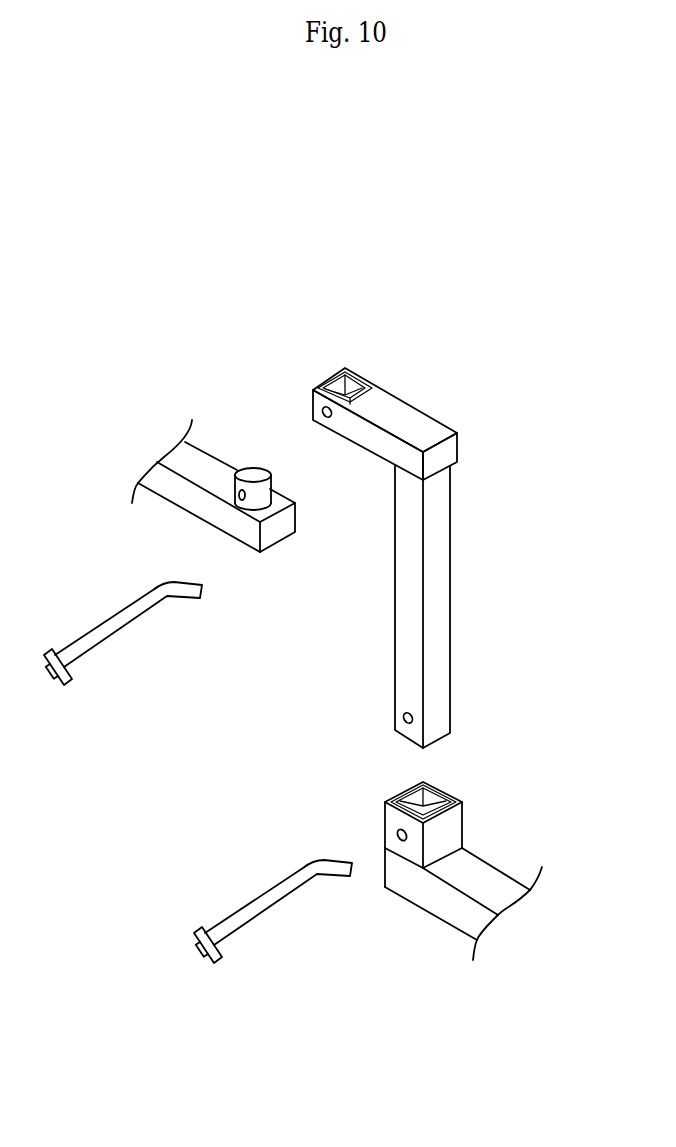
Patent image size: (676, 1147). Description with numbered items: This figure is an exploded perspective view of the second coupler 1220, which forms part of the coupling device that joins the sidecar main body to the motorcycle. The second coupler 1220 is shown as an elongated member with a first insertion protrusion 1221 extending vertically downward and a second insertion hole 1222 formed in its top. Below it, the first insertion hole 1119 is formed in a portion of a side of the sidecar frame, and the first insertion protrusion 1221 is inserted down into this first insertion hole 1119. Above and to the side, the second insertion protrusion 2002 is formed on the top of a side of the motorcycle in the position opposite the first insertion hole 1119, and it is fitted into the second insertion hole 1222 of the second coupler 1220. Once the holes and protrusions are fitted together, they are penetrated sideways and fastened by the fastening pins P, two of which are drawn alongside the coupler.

The second coupler 1220 is at (499, 366).
The second insertion hole 1222 is at (350, 378).
The first insertion protrusion 1221 is at (440, 692).
The second insertion protrusion 2002 is at (257, 470).
The first insertion hole 1119 is at (428, 800).
The fastening pin P is at (97, 635).